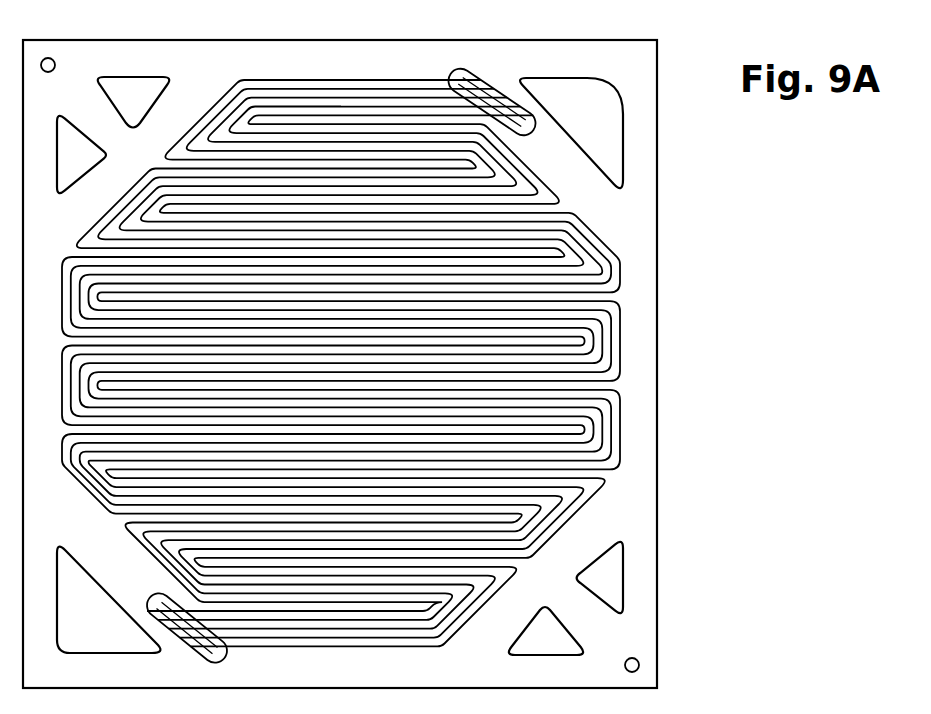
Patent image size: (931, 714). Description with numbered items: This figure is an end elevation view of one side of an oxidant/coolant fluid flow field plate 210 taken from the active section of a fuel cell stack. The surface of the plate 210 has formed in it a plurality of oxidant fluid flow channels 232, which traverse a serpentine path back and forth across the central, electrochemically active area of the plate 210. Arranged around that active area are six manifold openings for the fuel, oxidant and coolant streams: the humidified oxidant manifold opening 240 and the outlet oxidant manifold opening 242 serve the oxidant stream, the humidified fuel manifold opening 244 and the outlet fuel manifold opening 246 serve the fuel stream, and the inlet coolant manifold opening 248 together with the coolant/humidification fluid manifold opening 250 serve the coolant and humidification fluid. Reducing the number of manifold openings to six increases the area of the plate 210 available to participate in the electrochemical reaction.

The oxidant/coolant fluid flow field plate 210 is at (627, 72).
The oxidant fluid flow channels 232 is at (282, 118).
The humidified oxidant manifold opening 240 is at (128, 642).
The outlet oxidant manifold opening 242 is at (605, 143).
The humidified fuel manifold opening 244 is at (607, 587).
The outlet fuel manifold opening 246 is at (152, 90).
The inlet coolant manifold opening 248 is at (71, 132).
The coolant/humidification fluid manifold opening 250 is at (550, 640).